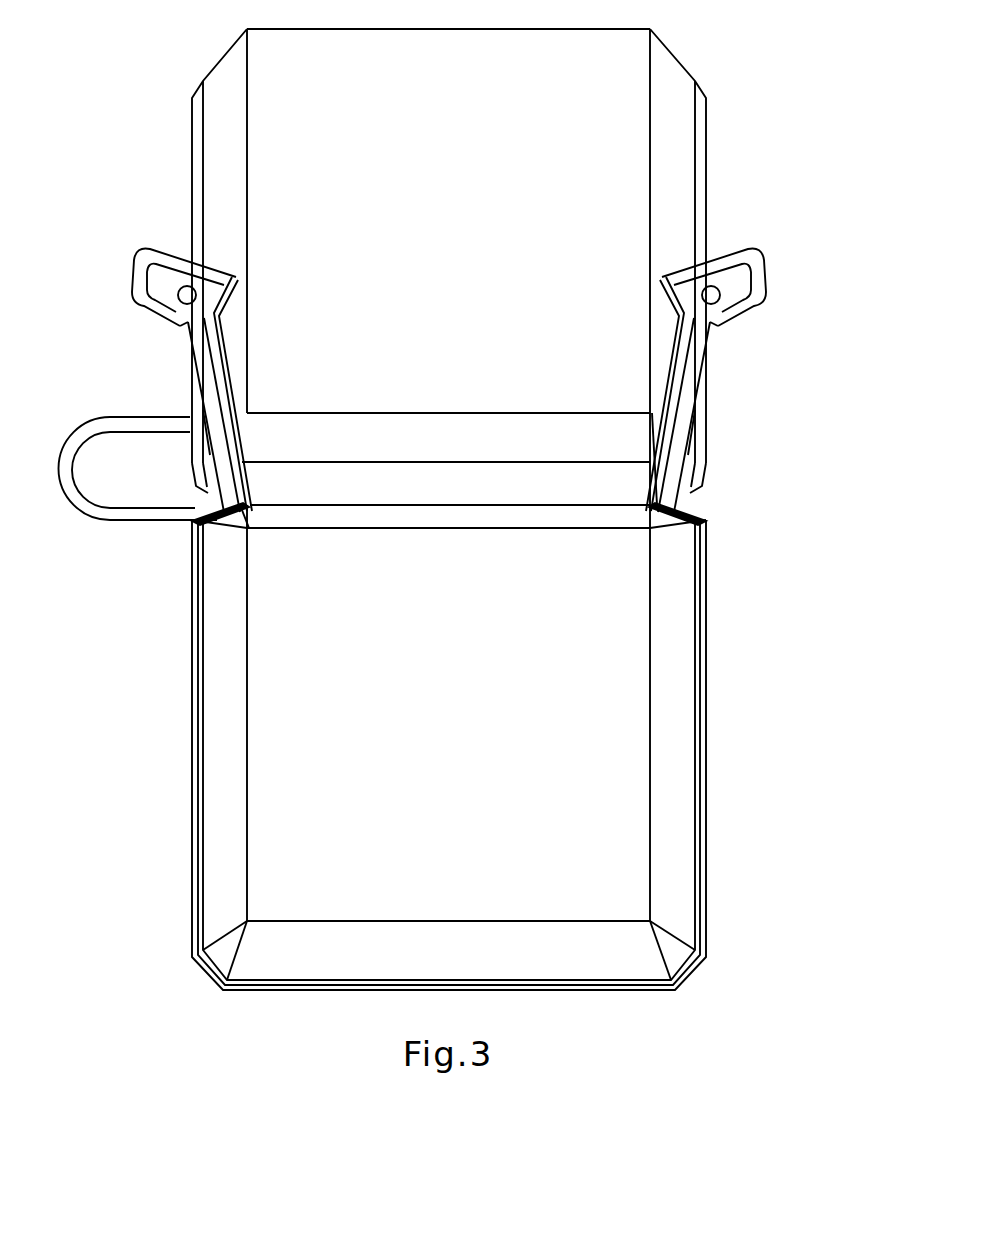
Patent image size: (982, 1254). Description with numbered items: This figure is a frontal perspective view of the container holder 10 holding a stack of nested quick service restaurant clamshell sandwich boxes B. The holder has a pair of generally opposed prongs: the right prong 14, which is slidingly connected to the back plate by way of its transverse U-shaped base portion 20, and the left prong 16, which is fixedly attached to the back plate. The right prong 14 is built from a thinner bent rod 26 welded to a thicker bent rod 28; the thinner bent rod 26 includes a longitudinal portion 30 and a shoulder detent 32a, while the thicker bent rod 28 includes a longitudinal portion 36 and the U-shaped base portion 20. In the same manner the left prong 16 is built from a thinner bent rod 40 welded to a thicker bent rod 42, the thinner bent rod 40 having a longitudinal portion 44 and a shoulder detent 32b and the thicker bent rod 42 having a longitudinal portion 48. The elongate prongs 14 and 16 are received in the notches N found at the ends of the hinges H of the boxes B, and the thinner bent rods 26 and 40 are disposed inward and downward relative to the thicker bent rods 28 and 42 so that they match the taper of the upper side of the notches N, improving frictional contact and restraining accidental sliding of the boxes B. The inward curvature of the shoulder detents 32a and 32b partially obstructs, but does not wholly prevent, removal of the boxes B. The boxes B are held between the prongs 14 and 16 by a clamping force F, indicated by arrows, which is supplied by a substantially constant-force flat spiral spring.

The container holder 10 is at (740, 180).
The right prong 14 is at (673, 356).
The left prong 16 is at (188, 400).
The U-shaped base portion 20 is at (93, 522).
The thinner bent rod 26 is at (662, 400).
The thicker bent rod 28 is at (703, 373).
The longitudinal portion 30 is at (670, 352).
The shoulder detent 32a is at (665, 268).
The shoulder detent 32b is at (243, 272).
The longitudinal portion 36 is at (688, 418).
The thinner bent rod 40 is at (238, 410).
The thicker bent rod 42 is at (185, 365).
The longitudinal portion 44 is at (230, 385).
The longitudinal portion 48 is at (190, 345).
The clamshell sandwich boxes B is at (438, 203).
The clamping force F is at (232, 275).
The hinges H is at (387, 503).
The notches N is at (196, 498).